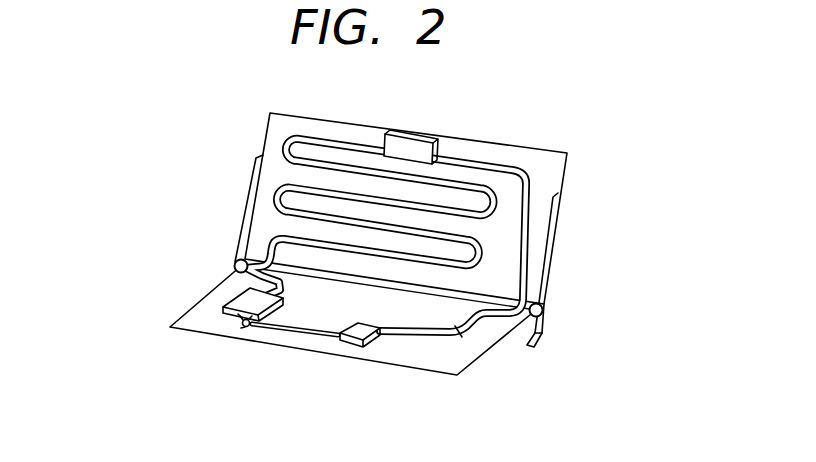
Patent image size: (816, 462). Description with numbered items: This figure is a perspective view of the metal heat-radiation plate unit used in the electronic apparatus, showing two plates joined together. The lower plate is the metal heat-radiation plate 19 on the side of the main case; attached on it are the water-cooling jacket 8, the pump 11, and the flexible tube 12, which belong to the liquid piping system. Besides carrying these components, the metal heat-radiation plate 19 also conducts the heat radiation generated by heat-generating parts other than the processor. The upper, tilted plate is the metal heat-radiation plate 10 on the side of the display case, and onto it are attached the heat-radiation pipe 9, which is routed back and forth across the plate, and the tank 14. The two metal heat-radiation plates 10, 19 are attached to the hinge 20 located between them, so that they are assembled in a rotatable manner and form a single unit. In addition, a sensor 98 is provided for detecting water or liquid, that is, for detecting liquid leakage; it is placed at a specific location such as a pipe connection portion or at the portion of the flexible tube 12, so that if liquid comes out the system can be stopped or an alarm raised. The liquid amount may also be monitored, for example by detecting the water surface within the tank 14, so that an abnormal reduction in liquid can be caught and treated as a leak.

The water-cooling jacket 8 is at (348, 350).
The heat-radiation pipe 9 is at (513, 165).
The metal heat-radiation plate 10 is at (272, 143).
The pump 11 is at (238, 296).
The flexible tube 12 is at (260, 328).
The tank 14 is at (414, 146).
The metal heat-radiation plate 19 is at (423, 360).
The hinge 20 is at (235, 262).
The sensor 98 is at (237, 320).